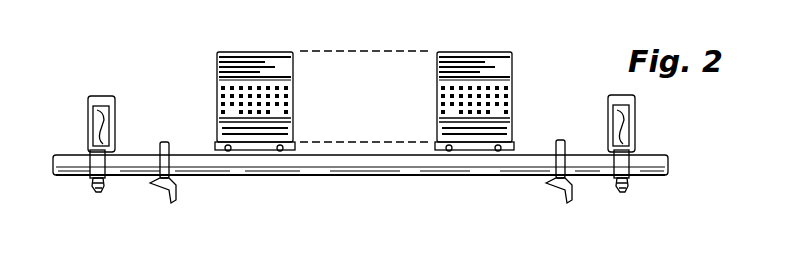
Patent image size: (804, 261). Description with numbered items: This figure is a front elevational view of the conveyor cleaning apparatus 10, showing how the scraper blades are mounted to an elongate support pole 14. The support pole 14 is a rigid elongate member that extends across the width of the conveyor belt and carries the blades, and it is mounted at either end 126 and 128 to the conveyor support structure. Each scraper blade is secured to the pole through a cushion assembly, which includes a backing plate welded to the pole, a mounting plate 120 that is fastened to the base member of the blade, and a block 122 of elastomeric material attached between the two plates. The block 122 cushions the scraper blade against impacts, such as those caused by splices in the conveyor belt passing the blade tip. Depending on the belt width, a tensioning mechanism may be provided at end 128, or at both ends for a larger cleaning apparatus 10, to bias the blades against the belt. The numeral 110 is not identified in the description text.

The conveyor cleaning apparatus 10 is at (140, 27).
The support pole 14 is at (255, 176).
The mounting rail 110 is at (410, 151).
The mounting plate 120 is at (512, 120).
The block of elastomeric material 122 is at (217, 128).
The pole end 126 is at (664, 176).
The pole end 128 is at (62, 176).